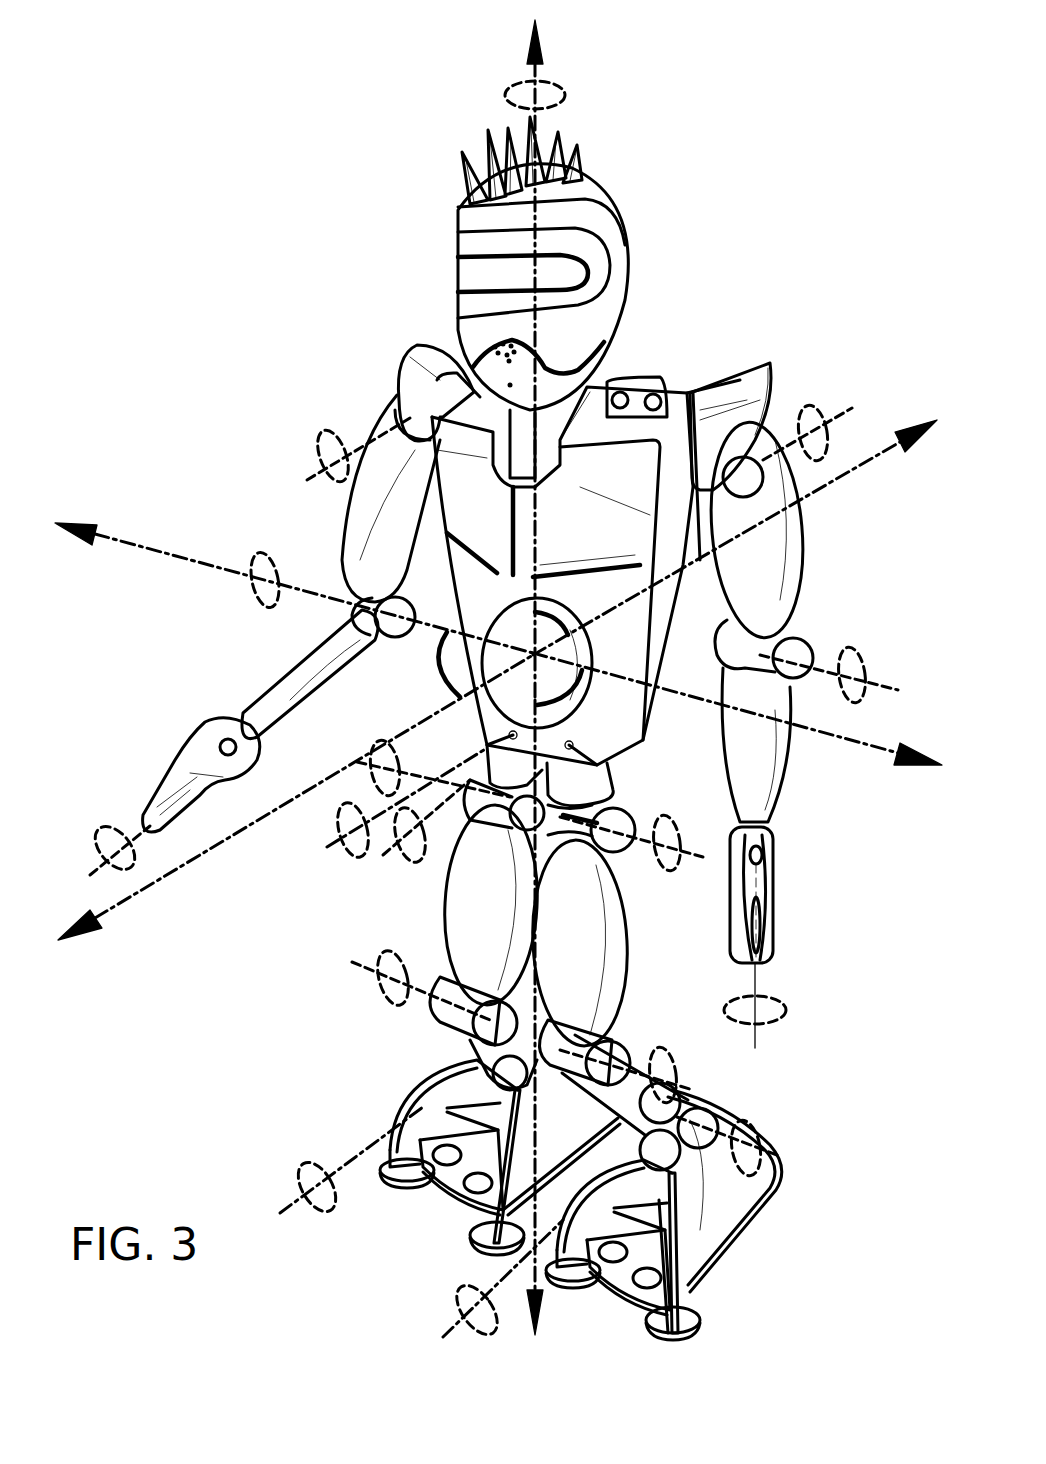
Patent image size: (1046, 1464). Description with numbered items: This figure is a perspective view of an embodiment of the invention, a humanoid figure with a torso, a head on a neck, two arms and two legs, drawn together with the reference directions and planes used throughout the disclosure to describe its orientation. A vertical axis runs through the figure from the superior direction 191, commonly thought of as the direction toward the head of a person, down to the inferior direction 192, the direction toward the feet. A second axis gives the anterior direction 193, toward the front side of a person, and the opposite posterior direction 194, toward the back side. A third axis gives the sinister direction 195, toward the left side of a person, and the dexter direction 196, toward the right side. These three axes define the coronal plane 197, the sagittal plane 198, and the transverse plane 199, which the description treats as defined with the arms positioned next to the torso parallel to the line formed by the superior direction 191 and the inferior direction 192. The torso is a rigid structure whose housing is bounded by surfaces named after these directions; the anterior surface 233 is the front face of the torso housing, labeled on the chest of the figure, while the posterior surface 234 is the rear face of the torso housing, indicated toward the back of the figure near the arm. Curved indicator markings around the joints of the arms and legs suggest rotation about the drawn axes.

The superior direction 191 is at (557, 355).
The inferior direction 192 is at (568, 1019).
The anterior direction 193 is at (287, 817).
The posterior direction 194 is at (748, 519).
The sinister direction 195 is at (739, 731).
The dexter direction 196 is at (287, 588).
The coronal plane 197 is at (582, 670).
The sagittal plane 198 is at (564, 622).
The transverse plane 199 is at (446, 652).
The anterior surface 233 is at (462, 500).
The posterior surface 234 is at (690, 612).